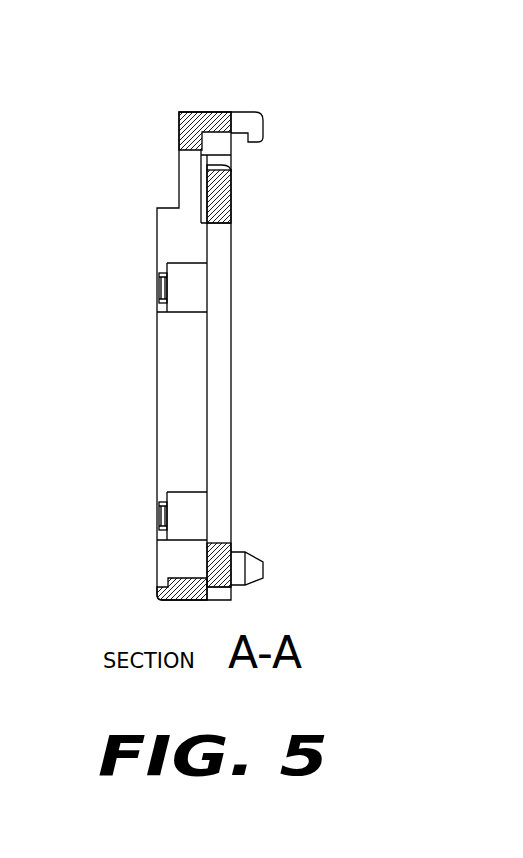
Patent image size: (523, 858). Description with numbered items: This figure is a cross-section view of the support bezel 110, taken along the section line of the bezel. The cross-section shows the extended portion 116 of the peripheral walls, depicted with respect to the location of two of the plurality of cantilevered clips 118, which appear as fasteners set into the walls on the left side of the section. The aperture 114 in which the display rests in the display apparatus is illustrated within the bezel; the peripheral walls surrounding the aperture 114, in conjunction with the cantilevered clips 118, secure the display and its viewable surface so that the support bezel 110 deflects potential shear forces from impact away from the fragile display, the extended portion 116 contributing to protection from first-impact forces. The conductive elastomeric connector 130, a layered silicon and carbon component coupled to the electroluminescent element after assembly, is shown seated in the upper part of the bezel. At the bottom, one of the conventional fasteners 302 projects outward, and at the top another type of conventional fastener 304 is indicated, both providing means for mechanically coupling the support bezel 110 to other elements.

The support bezel 110 is at (477, 722).
The aperture 114 is at (178, 453).
The extended portion 116 is at (167, 208).
The cantilevered clips 118 is at (168, 288).
The conductive elastomeric connector 130 is at (228, 201).
The conventional fasteners 302 is at (263, 568).
The conventional fastener 304 is at (290, 94).